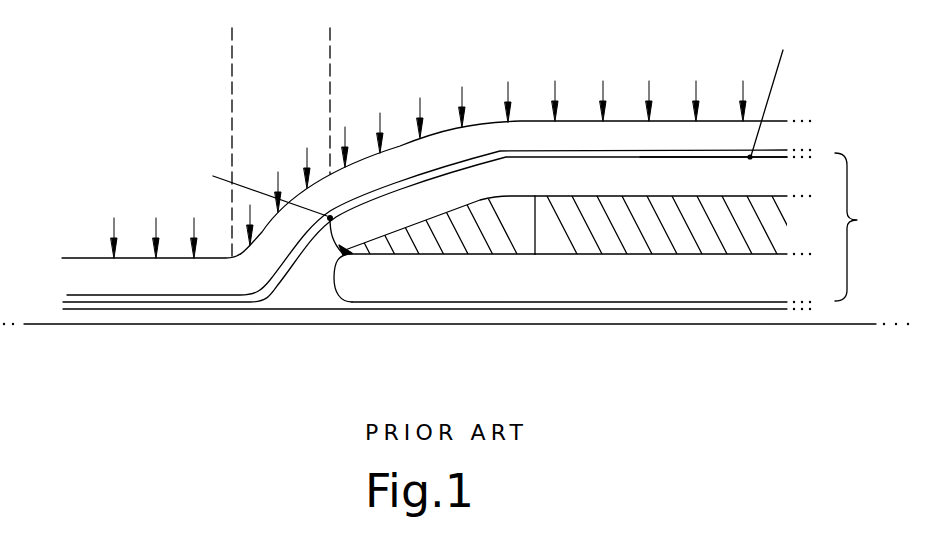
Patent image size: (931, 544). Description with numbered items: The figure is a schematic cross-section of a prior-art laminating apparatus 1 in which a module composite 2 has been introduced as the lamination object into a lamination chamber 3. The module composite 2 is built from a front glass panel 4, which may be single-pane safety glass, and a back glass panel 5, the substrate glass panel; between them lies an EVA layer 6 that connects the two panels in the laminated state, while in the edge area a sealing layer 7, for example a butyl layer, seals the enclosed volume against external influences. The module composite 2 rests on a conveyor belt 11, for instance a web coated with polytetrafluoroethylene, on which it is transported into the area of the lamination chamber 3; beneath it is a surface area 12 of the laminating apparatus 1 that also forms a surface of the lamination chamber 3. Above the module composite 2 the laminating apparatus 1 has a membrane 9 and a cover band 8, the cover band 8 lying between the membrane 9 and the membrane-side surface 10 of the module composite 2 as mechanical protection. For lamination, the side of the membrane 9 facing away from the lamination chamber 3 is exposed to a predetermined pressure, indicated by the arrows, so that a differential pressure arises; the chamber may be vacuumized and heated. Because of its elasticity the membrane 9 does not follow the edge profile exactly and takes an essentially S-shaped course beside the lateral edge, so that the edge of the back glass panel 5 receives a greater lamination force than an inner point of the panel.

The laminating apparatus 1 is at (456, 224).
The module composite 2 is at (854, 227).
The lamination chamber 3 is at (310, 287).
The front glass panel 4 is at (707, 280).
The back glass panel 5 is at (718, 175).
The EVA layer 6 is at (653, 230).
The sealing layer 7 is at (482, 243).
The cover band 8 is at (667, 152).
The membrane 9 is at (577, 135).
The membrane-side surface 10 is at (767, 152).
The conveyor belt 11 is at (775, 302).
The surface area 12 is at (847, 324).